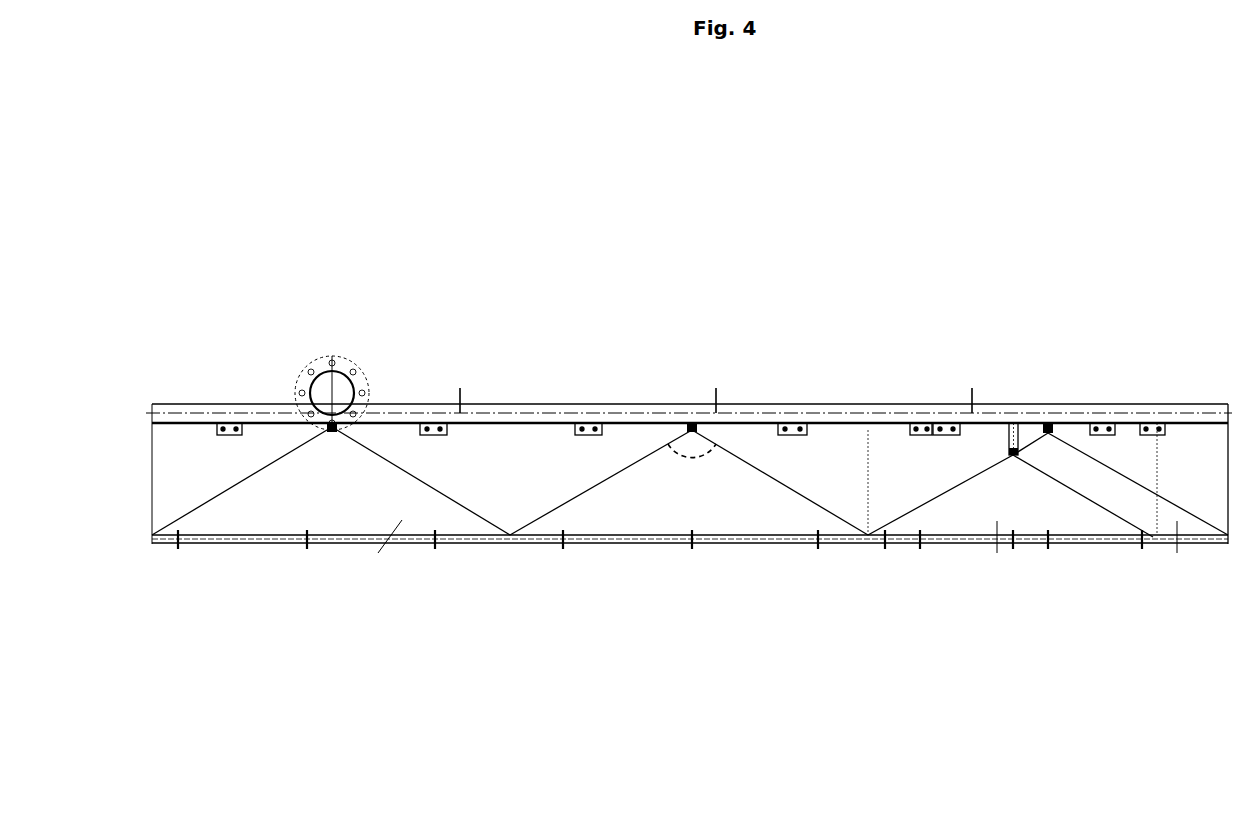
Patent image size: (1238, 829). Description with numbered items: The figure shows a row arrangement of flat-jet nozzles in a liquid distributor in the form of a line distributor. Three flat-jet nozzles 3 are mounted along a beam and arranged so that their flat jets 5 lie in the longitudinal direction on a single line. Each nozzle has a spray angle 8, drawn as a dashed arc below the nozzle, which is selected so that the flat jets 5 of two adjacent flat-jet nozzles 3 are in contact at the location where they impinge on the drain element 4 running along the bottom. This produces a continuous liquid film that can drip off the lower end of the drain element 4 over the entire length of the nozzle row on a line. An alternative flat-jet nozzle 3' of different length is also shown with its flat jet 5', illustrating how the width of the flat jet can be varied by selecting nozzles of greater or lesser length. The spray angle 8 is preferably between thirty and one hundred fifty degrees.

The flat-jet nozzle 3 is at (709, 357).
The alternative flat-jet nozzle 3' is at (982, 358).
The drain element 4 is at (808, 545).
The flat jet 5 is at (690, 573).
The flat jet of alternative nozzle 5' is at (1064, 587).
The spray angle 8 is at (688, 452).